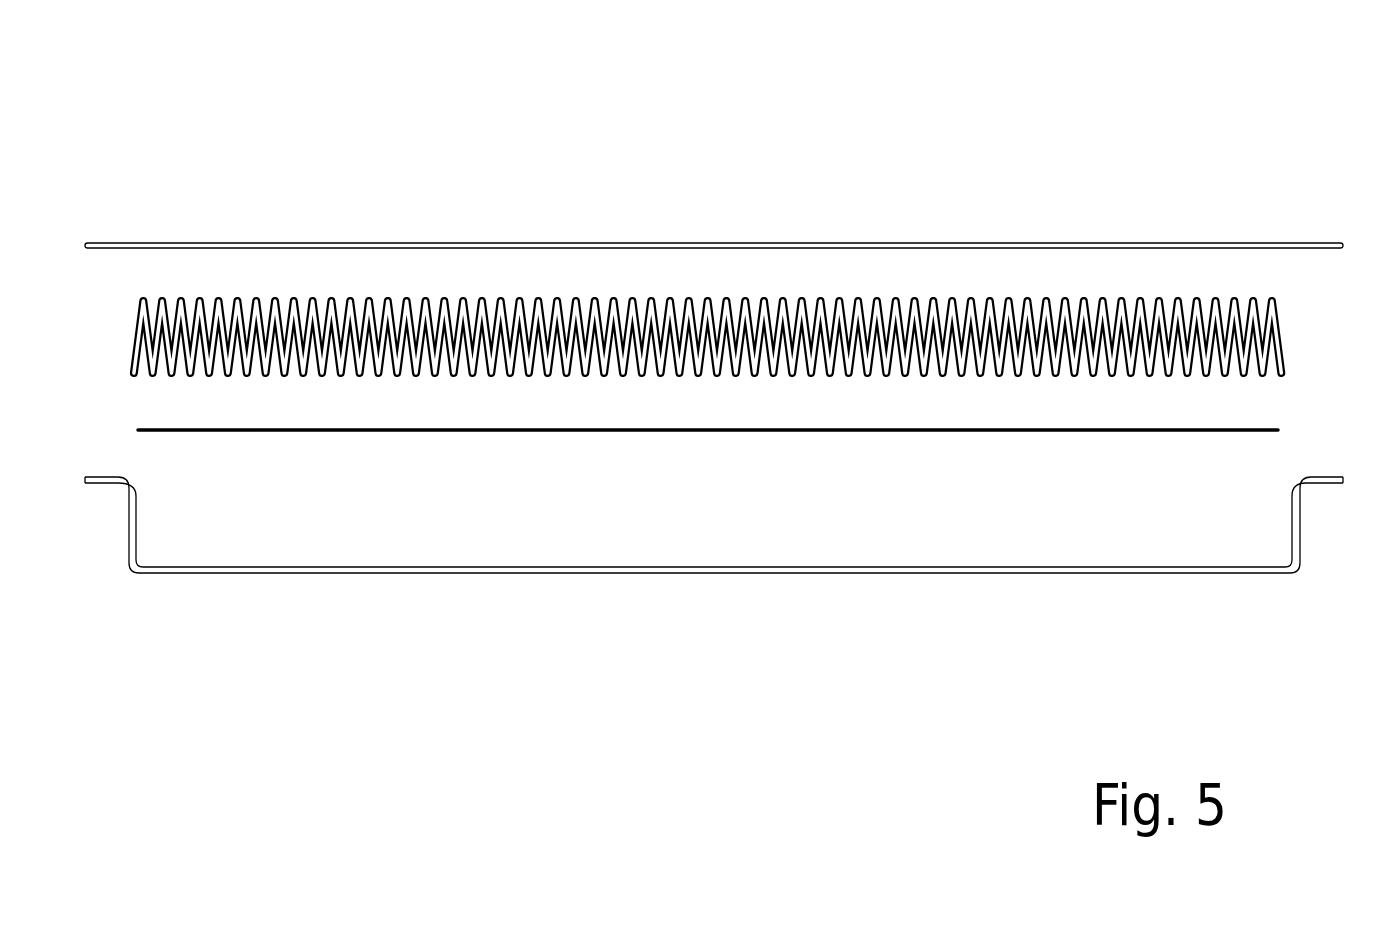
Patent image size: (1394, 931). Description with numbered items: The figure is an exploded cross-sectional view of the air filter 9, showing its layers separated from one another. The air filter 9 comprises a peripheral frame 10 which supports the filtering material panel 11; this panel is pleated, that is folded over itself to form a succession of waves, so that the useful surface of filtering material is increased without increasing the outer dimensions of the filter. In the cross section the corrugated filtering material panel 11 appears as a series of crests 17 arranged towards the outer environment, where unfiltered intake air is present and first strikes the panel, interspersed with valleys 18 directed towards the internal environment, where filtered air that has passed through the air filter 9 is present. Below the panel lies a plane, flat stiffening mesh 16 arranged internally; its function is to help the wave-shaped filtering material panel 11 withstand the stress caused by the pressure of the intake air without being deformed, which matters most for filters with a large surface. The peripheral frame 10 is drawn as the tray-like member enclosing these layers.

The air filter 9 is at (767, 680).
The peripheral frame 10 is at (461, 148).
The filtering material panel 11 is at (1288, 335).
The stiffening mesh 16 is at (360, 431).
The crests 17 is at (633, 291).
The valleys 18 is at (548, 383).